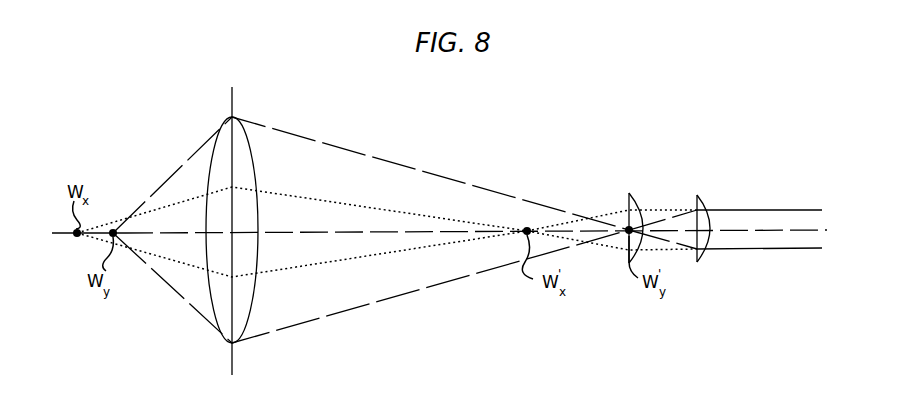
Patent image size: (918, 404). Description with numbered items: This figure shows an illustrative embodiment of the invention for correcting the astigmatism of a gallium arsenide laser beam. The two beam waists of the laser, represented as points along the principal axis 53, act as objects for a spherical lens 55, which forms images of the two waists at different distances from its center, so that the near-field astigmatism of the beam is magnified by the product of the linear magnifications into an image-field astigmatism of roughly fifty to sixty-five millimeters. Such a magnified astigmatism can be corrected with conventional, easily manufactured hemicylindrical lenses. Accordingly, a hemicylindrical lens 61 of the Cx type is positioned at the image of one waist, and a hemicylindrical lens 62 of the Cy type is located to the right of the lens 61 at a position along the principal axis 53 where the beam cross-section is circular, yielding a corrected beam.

The principal axis 53 is at (780, 231).
The spherical lens 55 is at (246, 153).
The hemicylindrical lens 61 is at (631, 195).
The hemicylindrical lens 62 is at (700, 196).